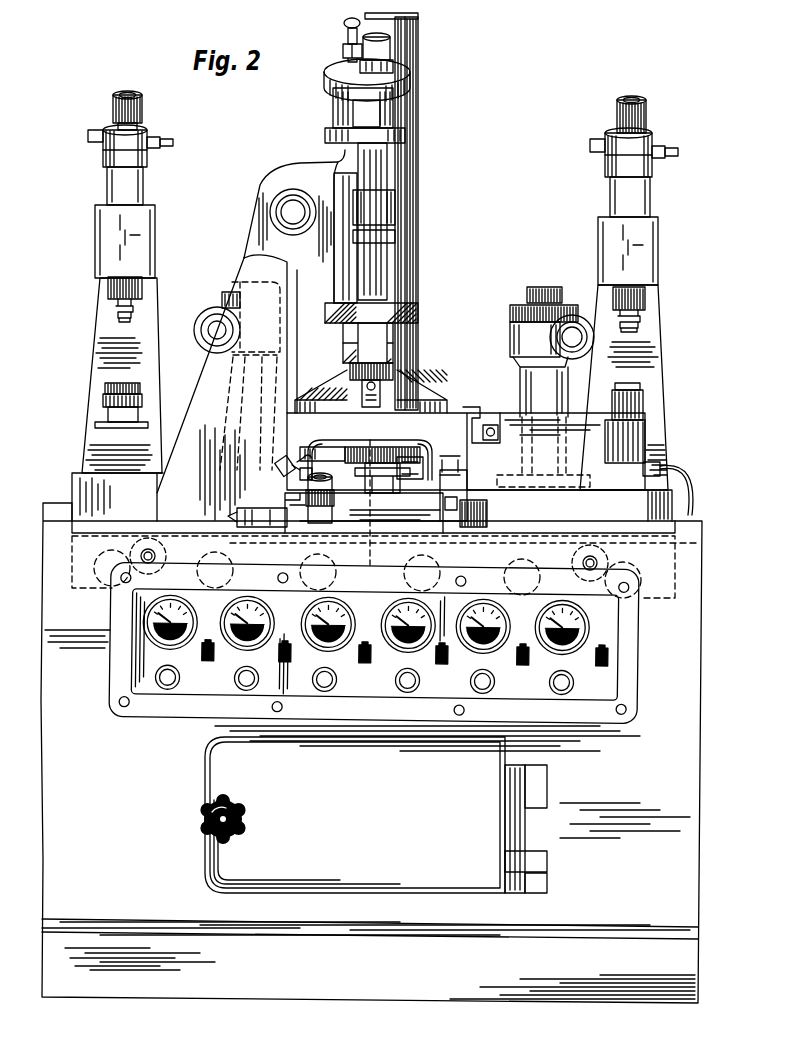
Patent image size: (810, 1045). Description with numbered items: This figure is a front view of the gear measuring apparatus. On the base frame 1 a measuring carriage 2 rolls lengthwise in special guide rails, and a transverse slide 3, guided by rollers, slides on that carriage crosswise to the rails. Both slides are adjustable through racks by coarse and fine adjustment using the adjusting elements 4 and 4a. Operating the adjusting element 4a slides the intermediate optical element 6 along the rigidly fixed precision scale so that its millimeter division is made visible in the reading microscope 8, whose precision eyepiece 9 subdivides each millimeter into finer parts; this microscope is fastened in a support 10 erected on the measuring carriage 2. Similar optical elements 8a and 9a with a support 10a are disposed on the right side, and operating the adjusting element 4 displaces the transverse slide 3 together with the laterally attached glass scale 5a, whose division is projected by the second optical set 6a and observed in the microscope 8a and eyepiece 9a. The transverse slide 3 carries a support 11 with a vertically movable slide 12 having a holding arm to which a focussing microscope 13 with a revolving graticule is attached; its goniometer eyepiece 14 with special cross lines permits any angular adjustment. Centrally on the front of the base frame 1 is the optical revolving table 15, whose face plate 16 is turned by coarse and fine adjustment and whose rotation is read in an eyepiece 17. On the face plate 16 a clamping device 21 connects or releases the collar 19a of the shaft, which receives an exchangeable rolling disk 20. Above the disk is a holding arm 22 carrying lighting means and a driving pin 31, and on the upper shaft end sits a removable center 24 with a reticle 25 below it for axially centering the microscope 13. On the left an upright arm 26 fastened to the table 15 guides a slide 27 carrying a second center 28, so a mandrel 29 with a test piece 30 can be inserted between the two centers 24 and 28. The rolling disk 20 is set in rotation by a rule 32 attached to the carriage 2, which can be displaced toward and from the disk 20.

The base frame 1 is at (58, 505).
The measuring carriage 2 is at (668, 513).
The transverse slide 3 is at (452, 425).
The adjusting element 4 is at (213, 309).
The adjusting element 4a is at (527, 295).
The glass scale 5a is at (496, 412).
The intermediate optical element 6 is at (100, 414).
The second optical set 6a is at (645, 412).
The reading microscope 8 is at (120, 290).
The reading microscope 8a is at (648, 300).
The precision eyepiece 9 is at (115, 107).
The precision eyepiece 9a is at (648, 113).
The support 10 is at (106, 330).
The support 10a is at (645, 338).
The support 11 is at (418, 25).
The slide 12 is at (341, 34).
The focussing microscope 13 is at (408, 118).
The goniometer eyepiece 14 is at (410, 68).
The optical revolving table 15 is at (412, 525).
The face plate 16 is at (443, 493).
The eyepiece 17 is at (320, 524).
The collar 19a is at (383, 480).
The rolling disk 20 is at (340, 446).
The clamping device 21 is at (307, 480).
The holding arm 22 is at (364, 392).
The removable center 24 is at (406, 395).
The reticle 25 is at (373, 452).
The upright arm 26 is at (263, 240).
The slide 27 is at (337, 160).
The second center 28 is at (390, 170).
The mandrel 29 is at (397, 210).
The test piece 30 is at (418, 312).
The driving pin 31 is at (352, 370).
The rule 32 is at (300, 452).